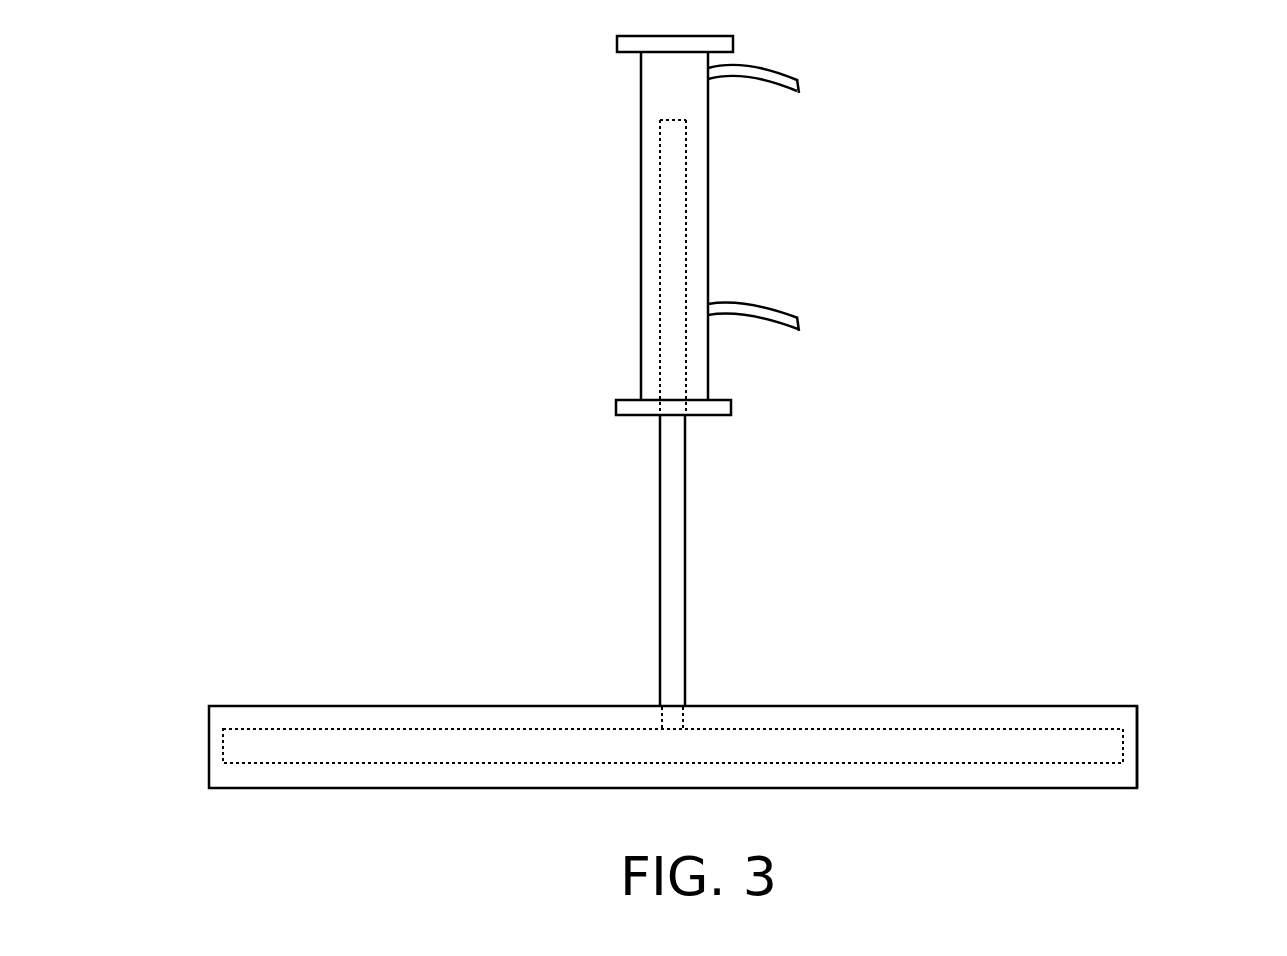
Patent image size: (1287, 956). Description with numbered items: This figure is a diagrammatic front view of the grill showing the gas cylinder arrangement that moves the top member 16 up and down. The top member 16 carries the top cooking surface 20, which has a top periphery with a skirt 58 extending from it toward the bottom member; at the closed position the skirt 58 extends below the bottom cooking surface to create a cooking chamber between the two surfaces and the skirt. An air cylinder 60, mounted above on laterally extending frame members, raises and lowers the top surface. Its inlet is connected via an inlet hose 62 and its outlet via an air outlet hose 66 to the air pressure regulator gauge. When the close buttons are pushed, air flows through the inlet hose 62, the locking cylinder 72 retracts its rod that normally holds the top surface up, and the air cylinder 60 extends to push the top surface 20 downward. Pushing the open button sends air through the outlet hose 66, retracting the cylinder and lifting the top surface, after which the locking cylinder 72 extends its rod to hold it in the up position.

The top member 16 is at (882, 687).
The top cooking surface 20 is at (277, 732).
The skirt 58 is at (1138, 750).
The air cylinder 60 is at (641, 228).
The inlet hose 62 is at (800, 93).
The air outlet hose 66 is at (752, 300).
The locking cylinder 72 is at (660, 561).